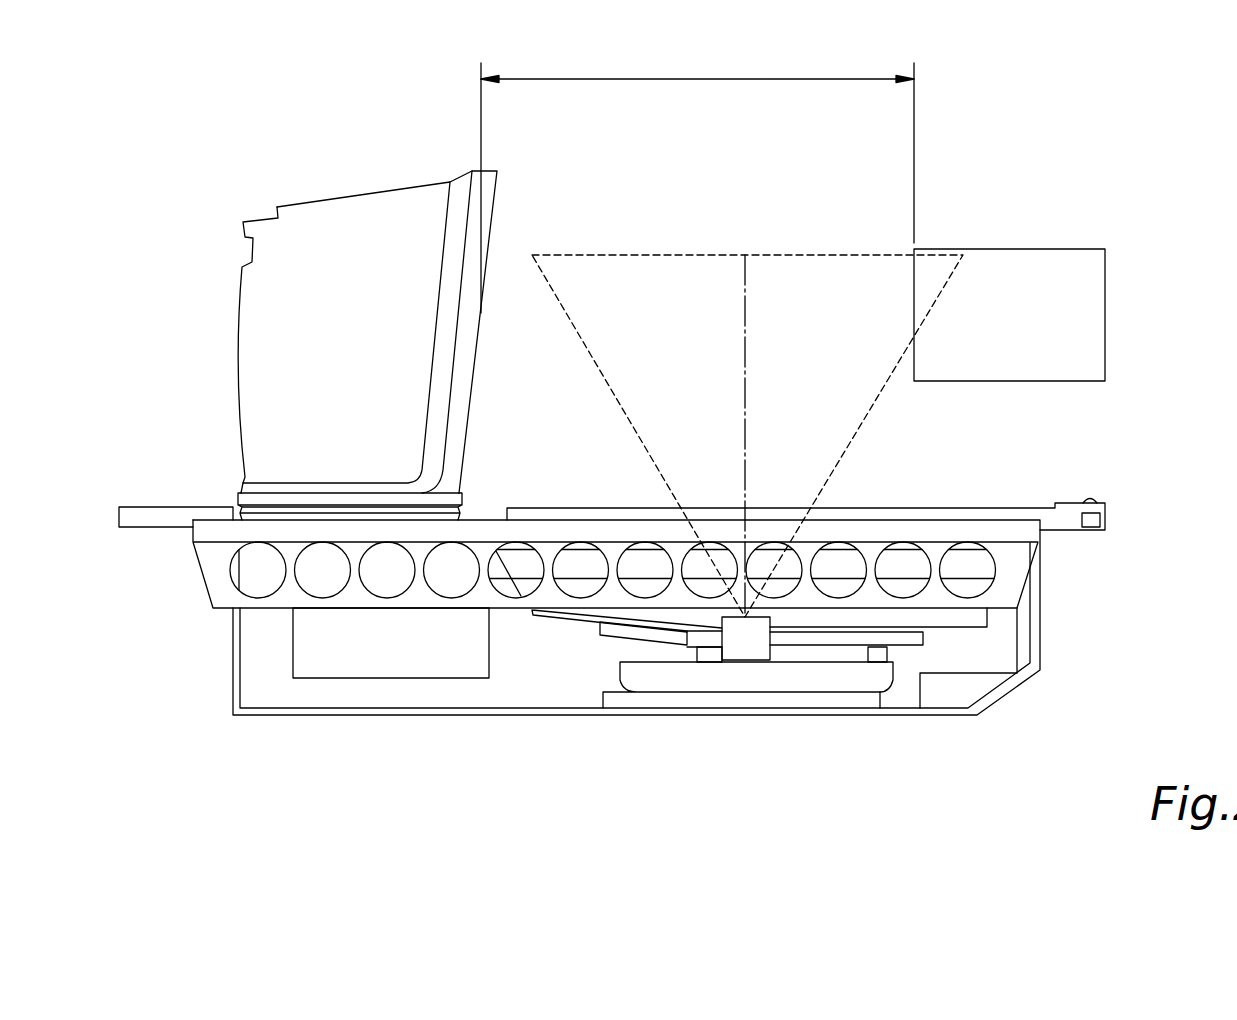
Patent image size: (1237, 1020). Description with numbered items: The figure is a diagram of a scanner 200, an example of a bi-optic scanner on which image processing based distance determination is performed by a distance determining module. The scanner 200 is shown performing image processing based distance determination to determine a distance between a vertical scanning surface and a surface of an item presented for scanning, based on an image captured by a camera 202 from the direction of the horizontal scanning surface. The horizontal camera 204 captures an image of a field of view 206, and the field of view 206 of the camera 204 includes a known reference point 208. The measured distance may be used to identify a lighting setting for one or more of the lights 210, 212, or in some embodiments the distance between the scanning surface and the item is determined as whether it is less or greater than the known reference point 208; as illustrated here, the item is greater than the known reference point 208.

The scanner 200 is at (1145, 107).
The camera 202 is at (707, 79).
The horizontal camera 204 is at (688, 682).
The field of view 206 is at (842, 253).
The known reference point 208 is at (745, 348).
The light 210 is at (750, 647).
The light 212 is at (367, 192).